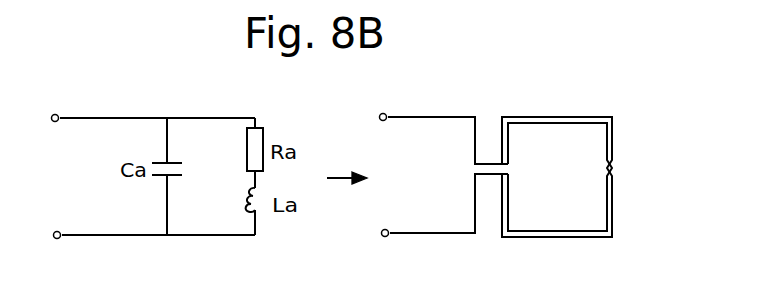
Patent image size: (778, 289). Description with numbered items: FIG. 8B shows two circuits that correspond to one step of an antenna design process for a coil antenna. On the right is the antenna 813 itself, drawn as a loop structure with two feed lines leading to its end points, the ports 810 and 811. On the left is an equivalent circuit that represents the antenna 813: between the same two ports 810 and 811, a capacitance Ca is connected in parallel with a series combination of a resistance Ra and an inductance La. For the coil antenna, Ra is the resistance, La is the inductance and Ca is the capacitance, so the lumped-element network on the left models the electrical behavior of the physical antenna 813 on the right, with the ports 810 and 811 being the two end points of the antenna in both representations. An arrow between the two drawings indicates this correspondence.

The port 810 is at (57, 115).
The port 811 is at (59, 232).
The antenna 813 is at (597, 117).